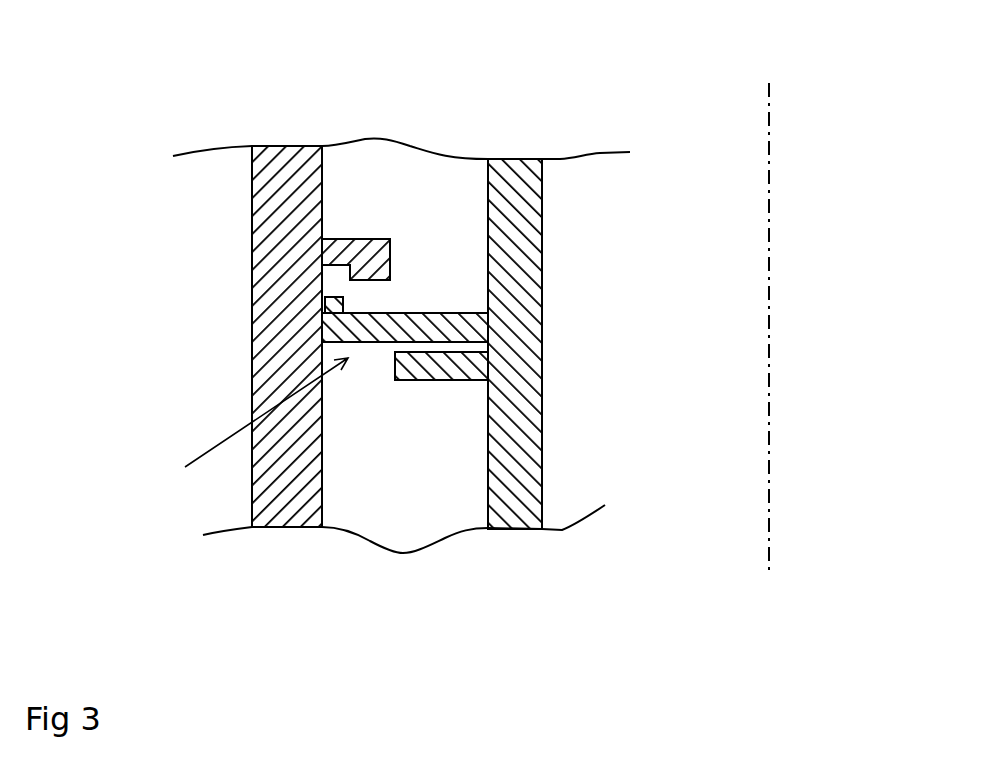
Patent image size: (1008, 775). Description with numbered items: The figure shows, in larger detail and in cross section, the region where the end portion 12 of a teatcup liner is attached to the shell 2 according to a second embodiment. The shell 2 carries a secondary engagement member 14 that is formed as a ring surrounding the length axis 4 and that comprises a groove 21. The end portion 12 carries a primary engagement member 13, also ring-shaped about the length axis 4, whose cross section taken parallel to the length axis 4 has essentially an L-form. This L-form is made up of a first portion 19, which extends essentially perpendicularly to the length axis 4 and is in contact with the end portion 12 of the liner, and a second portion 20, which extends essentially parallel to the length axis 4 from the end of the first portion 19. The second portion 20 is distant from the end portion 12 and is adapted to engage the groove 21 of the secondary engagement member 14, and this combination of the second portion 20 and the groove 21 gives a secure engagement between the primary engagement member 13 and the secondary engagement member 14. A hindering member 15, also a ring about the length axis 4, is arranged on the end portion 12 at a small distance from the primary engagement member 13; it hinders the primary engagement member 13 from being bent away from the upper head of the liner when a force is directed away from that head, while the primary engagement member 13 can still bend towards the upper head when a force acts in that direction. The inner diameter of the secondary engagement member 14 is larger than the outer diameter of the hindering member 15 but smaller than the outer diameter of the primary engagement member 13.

The shell 2 is at (273, 190).
The length axis 4 is at (770, 120).
The end portion 12 is at (523, 232).
The primary engagement member 13 is at (239, 431).
The secondary engagement member 14 is at (327, 247).
The hindering member 15 is at (483, 373).
The first portion 19 is at (330, 335).
The second portion 20 is at (330, 303).
The groove 21 is at (337, 273).